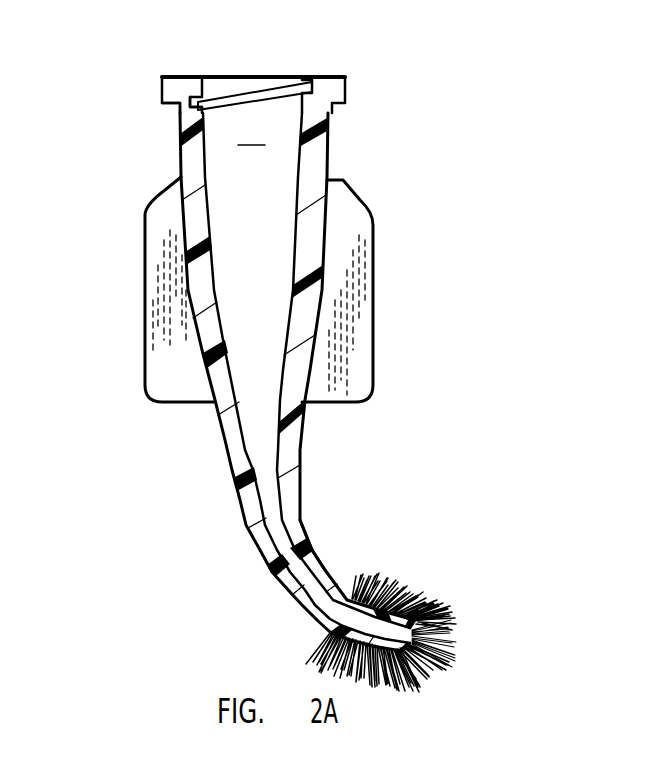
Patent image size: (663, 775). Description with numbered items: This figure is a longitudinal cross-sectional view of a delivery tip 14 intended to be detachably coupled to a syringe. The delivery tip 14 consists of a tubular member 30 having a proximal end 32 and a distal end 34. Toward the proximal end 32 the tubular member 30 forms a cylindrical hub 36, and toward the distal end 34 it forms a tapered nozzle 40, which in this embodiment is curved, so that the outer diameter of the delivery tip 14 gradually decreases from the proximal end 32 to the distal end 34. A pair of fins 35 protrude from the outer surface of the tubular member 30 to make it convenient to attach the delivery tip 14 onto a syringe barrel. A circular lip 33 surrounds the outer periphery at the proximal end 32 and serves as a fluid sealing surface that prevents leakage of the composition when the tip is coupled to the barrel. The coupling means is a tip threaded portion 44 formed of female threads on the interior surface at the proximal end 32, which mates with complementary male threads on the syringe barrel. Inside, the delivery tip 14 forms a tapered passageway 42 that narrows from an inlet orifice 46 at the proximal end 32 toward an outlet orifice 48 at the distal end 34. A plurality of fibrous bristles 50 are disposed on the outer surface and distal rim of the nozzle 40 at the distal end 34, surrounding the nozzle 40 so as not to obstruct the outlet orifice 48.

The delivery tip 14 is at (447, 343).
The tubular member 30 is at (216, 418).
The proximal end 32 is at (180, 115).
The circular lip 33 is at (345, 85).
The distal end 34 is at (380, 588).
The fins 35 is at (163, 292).
The cylindrical hub 36 is at (335, 150).
The tapered nozzle 40 is at (303, 527).
The tapered passageway 42 is at (259, 260).
The tip threaded portion 44 is at (205, 100).
The inlet orifice 46 is at (256, 78).
The outlet orifice 48 is at (440, 650).
The fibrous bristles 50 is at (450, 612).